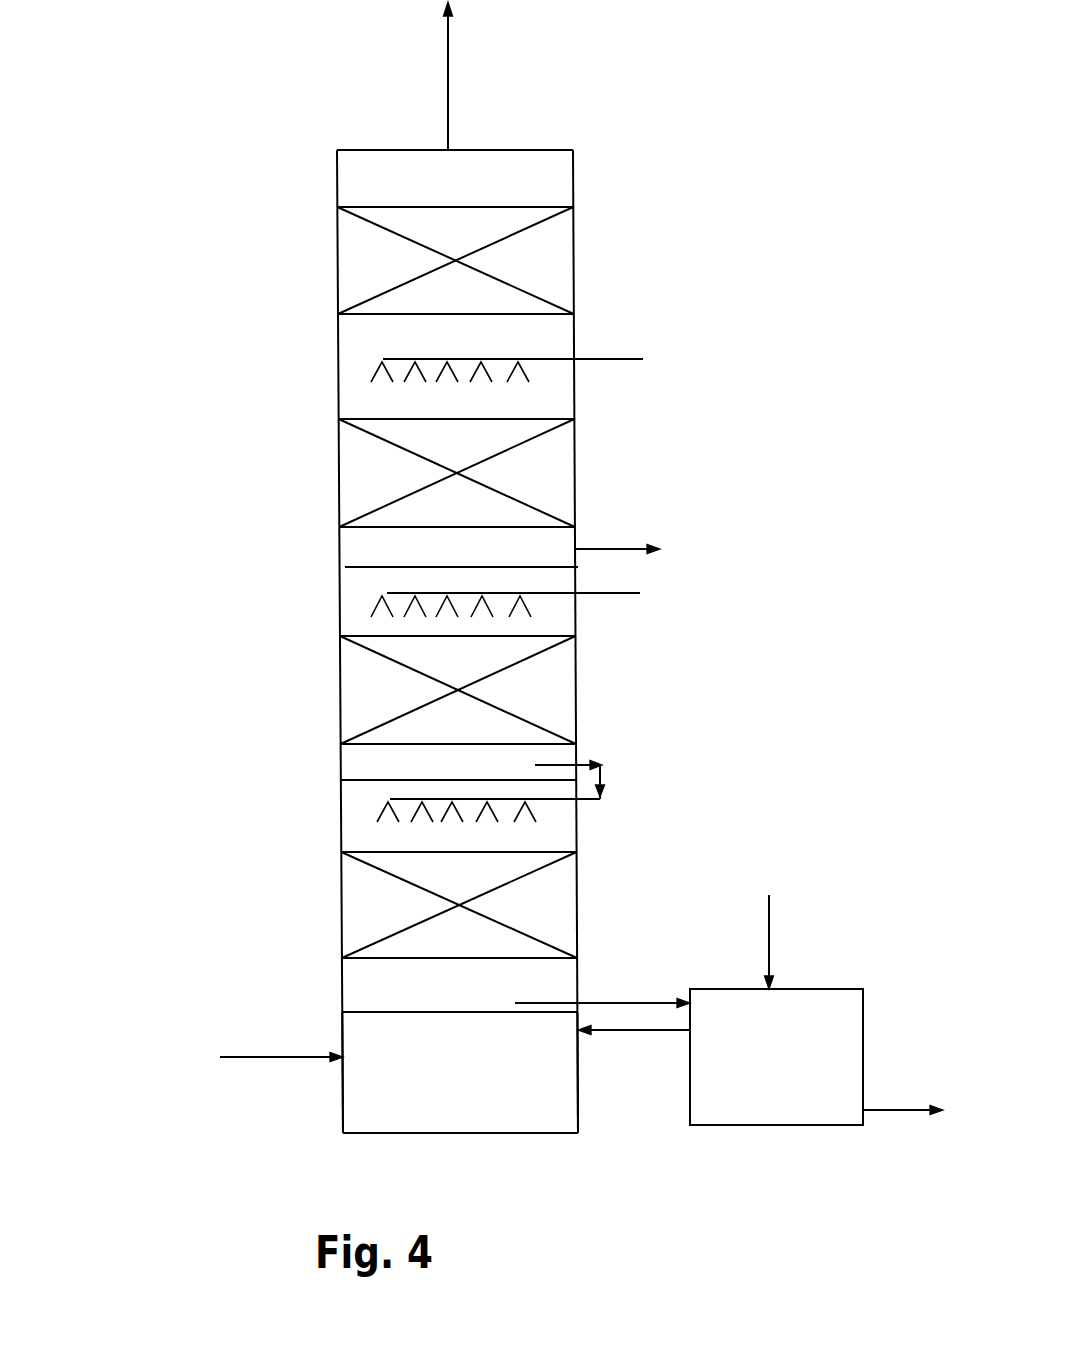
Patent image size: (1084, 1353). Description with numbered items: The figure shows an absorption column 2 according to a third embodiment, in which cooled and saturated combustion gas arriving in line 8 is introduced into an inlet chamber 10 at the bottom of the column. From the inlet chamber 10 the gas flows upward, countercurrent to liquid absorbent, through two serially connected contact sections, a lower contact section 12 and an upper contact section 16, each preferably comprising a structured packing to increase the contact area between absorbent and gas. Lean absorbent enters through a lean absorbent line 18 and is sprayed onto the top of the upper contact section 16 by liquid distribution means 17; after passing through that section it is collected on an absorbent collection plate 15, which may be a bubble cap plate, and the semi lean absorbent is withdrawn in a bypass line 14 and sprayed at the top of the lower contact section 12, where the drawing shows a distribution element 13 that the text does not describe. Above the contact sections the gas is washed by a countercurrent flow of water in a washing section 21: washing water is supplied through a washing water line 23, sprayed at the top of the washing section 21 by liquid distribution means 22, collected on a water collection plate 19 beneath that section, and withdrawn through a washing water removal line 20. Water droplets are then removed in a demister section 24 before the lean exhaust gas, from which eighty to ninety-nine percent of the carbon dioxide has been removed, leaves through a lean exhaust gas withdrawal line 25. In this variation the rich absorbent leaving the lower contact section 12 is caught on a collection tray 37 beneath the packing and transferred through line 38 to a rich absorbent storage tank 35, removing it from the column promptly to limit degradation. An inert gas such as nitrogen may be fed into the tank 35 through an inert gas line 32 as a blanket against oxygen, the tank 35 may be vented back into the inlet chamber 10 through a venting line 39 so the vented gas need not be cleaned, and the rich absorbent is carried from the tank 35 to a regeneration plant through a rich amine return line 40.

The absorption column 2 is at (208, 296).
The combustion gas line 8 is at (273, 1052).
The inlet chamber 10 is at (453, 1077).
The lower contact section 12 is at (389, 917).
The first distributor 13 is at (383, 810).
The bypass line 14 is at (640, 745).
The absorbent collection plate 15 is at (340, 780).
The upper contact section 16 is at (389, 704).
The liquid distribution means 17 is at (532, 613).
The lean absorbent line 18 is at (640, 593).
The water collection plate 19 is at (383, 572).
The washing water removal line 20 is at (608, 543).
The washing section 21 is at (389, 483).
The liquid distribution means 22 is at (383, 380).
The washing water line 23 is at (620, 358).
The demister section 24 is at (385, 275).
The lean exhaust gas withdrawal line 25 is at (451, 47).
The inert gas line 32 is at (769, 930).
The rich absorbent storage tank 35 is at (788, 1088).
The collection tray 37 is at (367, 1002).
The rich absorbent transfer line 38 is at (637, 1000).
The venting line 39 is at (637, 1032).
The rich amine return line 40 is at (918, 1110).